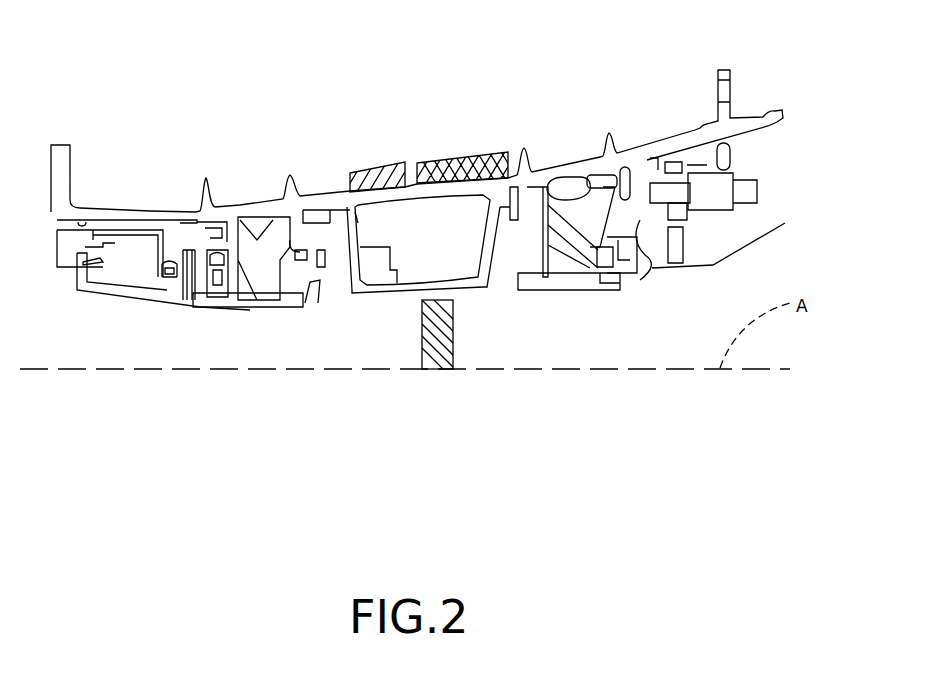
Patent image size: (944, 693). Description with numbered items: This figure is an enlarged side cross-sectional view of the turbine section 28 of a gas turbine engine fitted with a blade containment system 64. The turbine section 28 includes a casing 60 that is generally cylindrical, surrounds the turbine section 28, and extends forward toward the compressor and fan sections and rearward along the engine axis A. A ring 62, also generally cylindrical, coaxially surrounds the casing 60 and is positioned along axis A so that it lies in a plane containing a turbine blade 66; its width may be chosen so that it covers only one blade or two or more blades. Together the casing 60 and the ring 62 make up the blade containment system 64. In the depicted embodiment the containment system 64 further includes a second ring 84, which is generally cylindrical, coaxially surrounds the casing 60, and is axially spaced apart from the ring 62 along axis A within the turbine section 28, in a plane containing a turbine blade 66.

The turbine section 28 is at (505, 90).
The casing 60 is at (150, 208).
The ring 62 is at (470, 152).
The blade containment system 64 is at (393, 130).
The turbine blade 66 is at (440, 357).
The second ring 84 is at (372, 165).